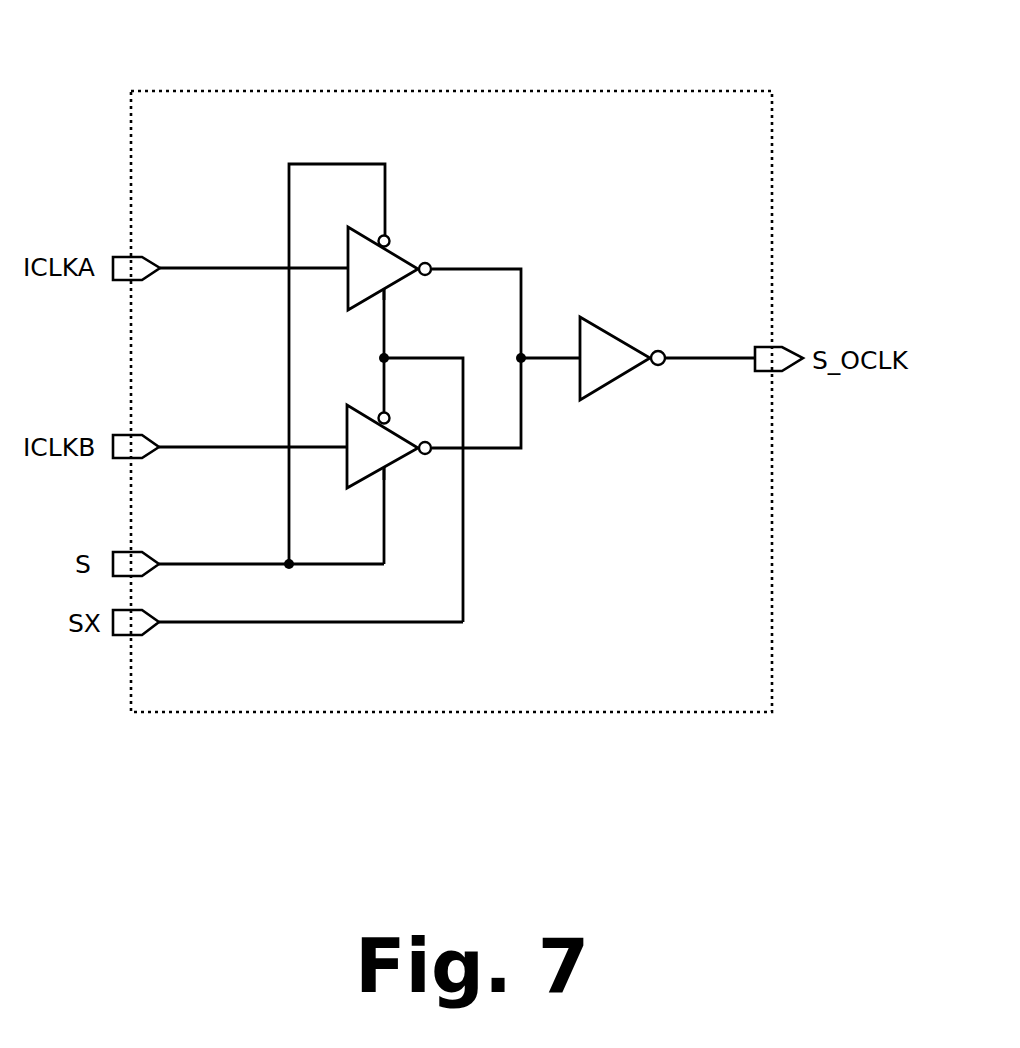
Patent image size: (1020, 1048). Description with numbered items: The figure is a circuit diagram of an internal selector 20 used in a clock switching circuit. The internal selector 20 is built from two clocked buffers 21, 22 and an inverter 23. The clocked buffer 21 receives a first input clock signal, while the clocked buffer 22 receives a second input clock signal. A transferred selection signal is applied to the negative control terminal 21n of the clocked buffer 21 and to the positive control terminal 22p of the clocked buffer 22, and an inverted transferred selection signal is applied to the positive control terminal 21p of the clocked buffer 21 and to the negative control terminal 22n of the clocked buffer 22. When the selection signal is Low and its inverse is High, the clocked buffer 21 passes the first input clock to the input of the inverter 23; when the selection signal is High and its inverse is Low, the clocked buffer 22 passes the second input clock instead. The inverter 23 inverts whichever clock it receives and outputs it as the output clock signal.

The internal selector 20 is at (640, 91).
The clocked buffer 21 is at (348, 242).
The negative control terminal 21n is at (390, 238).
The positive control terminal 21p is at (387, 292).
The clocked buffer 22 is at (347, 415).
The negative control terminal 22n is at (390, 414).
The positive control terminal 22p is at (387, 474).
The inverter 23 is at (616, 337).